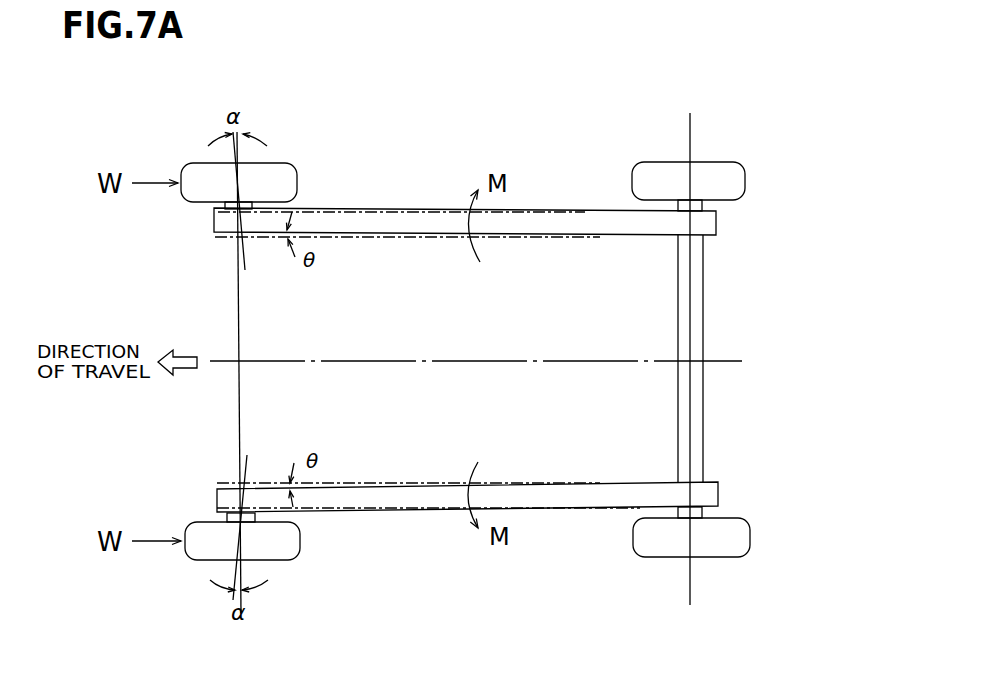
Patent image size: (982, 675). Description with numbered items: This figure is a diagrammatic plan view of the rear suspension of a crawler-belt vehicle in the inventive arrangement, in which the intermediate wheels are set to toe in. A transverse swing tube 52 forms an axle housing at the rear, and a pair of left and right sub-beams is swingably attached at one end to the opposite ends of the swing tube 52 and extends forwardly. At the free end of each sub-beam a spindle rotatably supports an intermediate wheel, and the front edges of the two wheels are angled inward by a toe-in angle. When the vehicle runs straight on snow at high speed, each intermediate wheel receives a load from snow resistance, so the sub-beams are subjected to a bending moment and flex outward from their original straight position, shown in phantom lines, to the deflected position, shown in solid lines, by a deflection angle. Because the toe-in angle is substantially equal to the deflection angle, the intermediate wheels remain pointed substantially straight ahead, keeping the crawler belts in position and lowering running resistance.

The swing tube 52 is at (705, 292).